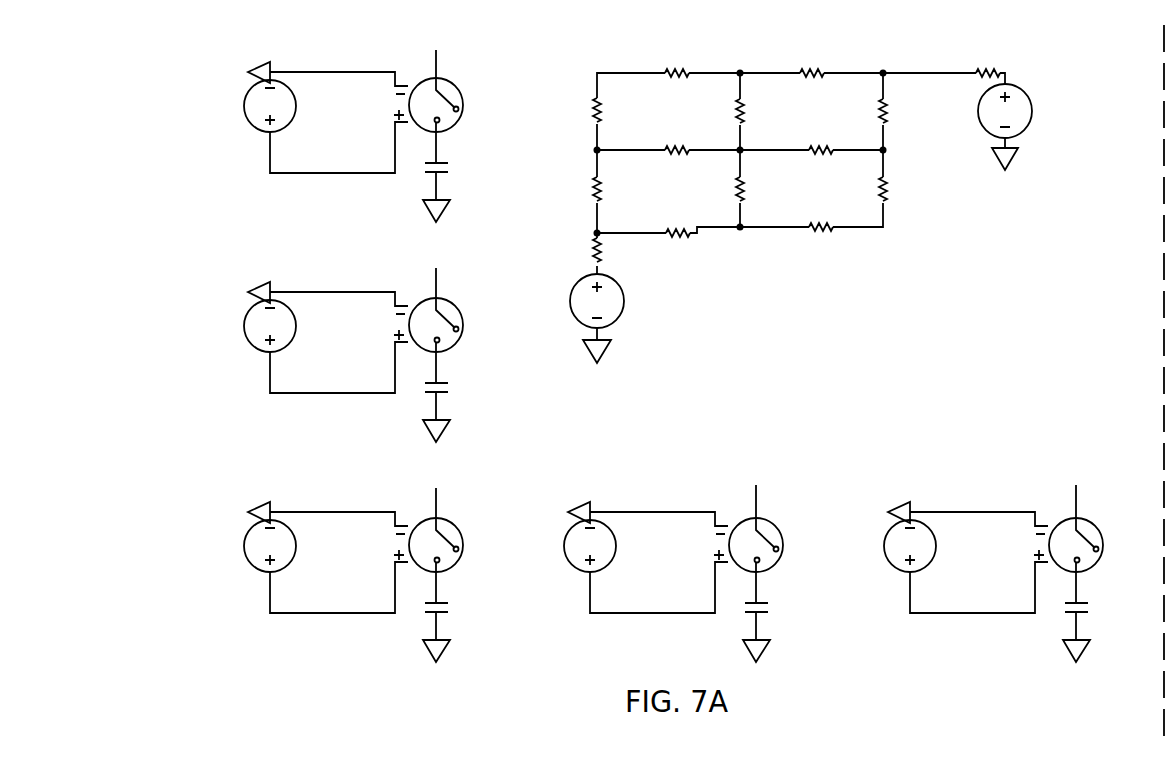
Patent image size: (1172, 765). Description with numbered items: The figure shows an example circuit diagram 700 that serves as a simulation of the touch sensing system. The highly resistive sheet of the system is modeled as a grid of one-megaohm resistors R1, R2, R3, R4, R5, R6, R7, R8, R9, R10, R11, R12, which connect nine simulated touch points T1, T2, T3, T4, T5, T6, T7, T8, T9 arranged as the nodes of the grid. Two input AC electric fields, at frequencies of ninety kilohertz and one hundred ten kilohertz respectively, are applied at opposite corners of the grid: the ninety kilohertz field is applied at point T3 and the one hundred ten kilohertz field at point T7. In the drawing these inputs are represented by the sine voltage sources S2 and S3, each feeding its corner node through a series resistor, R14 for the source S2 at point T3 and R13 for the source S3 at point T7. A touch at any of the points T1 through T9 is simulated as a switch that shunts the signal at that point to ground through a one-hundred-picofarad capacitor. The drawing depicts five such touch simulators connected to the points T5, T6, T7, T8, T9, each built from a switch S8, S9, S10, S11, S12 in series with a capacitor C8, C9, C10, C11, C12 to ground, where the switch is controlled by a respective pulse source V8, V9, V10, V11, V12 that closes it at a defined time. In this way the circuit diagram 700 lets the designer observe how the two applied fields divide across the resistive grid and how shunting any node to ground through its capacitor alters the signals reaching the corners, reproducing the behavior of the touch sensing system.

The circuit diagram 700 is at (205, 70).
The pulse voltage source V8 is at (897, 536).
The pulse voltage source V9 is at (577, 536).
The pulse voltage source V10 is at (255, 96).
The pulse voltage source V11 is at (255, 316).
The pulse voltage source V12 is at (255, 536).
The touch switch S8 is at (1100, 528).
The touch switch S9 is at (780, 528).
The touch switch S10 is at (460, 91).
The touch switch S11 is at (460, 310).
The touch switch S12 is at (460, 530).
The touch capacitor C8 is at (1090, 612).
The touch capacitor C9 is at (770, 612).
The touch capacitor C10 is at (450, 172).
The touch capacitor C11 is at (450, 392).
The touch capacitor C12 is at (450, 612).
The resistor R1 is at (614, 113).
The resistor R2 is at (676, 74).
The resistor R3 is at (676, 149).
The resistor R4 is at (614, 191).
The resistor R5 is at (678, 232).
The resistor R6 is at (758, 113).
The resistor R7 is at (758, 191).
The resistor R8 is at (811, 74).
The resistor R9 is at (821, 149).
The resistor R10 is at (821, 229).
The resistor R11 is at (902, 112).
The resistor R12 is at (902, 189).
The source resistor R13 is at (613, 255).
The source resistor R14 is at (985, 62).
The simulated touch point T1 is at (872, 221).
The simulated touch point T2 is at (896, 150).
The simulated touch point T3 is at (884, 63).
The simulated touch point T4 is at (730, 217).
The simulated touch point T5 is at (729, 140).
The simulated touch point T6 is at (741, 63).
The simulated touch point T7 is at (586, 233).
The simulated touch point T8 is at (586, 150).
The simulated touch point T9 is at (626, 74).
The sine voltage source S2 is at (1048, 121).
The sine voltage source S3 is at (651, 318).